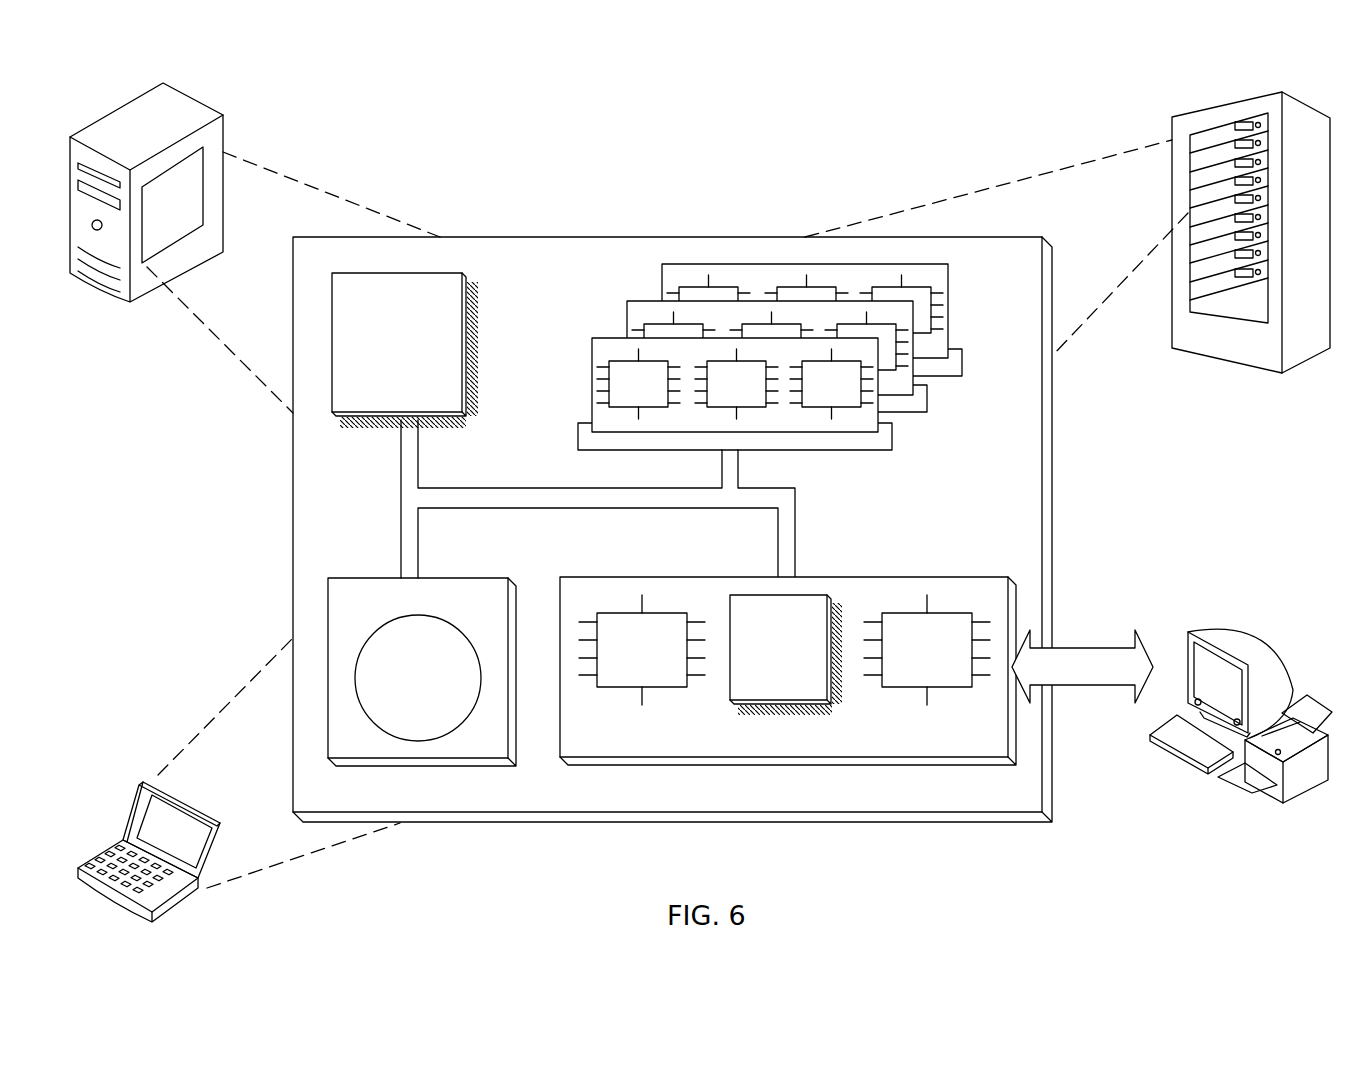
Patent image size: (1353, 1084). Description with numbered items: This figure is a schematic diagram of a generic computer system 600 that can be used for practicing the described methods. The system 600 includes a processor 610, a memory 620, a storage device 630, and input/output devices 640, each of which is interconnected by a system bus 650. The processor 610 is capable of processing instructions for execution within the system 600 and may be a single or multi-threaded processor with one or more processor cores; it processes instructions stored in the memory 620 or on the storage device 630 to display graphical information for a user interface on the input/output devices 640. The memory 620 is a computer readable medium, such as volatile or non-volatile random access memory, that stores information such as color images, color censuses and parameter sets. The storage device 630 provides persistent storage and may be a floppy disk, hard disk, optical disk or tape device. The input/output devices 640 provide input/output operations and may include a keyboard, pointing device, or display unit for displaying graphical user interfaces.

The generic computer system 600 is at (488, 112).
The processor 610 is at (405, 350).
The memory 620 is at (955, 410).
The storage device 630 is at (422, 672).
The input/output devices 640 is at (1186, 638).
The system bus 650 is at (594, 508).